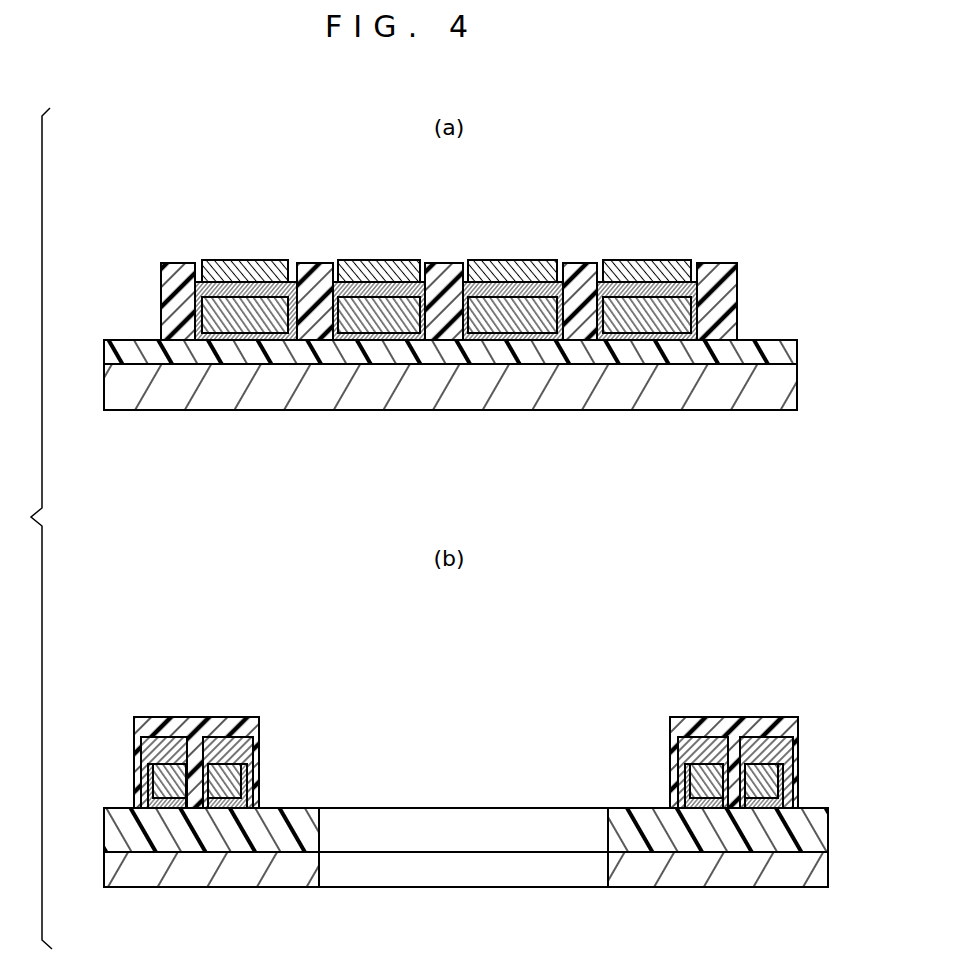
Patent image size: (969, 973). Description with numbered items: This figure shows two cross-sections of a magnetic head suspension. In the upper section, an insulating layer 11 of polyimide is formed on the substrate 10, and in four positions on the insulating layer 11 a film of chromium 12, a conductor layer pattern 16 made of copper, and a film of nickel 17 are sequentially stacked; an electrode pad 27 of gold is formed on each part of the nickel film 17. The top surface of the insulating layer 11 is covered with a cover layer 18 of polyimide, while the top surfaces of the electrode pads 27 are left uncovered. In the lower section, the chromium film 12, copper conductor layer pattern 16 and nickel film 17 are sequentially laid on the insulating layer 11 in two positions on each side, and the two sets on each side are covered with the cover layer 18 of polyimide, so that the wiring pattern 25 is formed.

The substrate 10 is at (650, 393).
The insulating layer 11 is at (783, 353).
The film of chromium 12 is at (225, 330).
The conductor layer pattern 16 is at (260, 317).
The film of nickel 17 is at (233, 282).
The cover layer 18 is at (177, 263).
The wiring pattern 25 is at (158, 692).
The electrode pad 27 is at (258, 262).